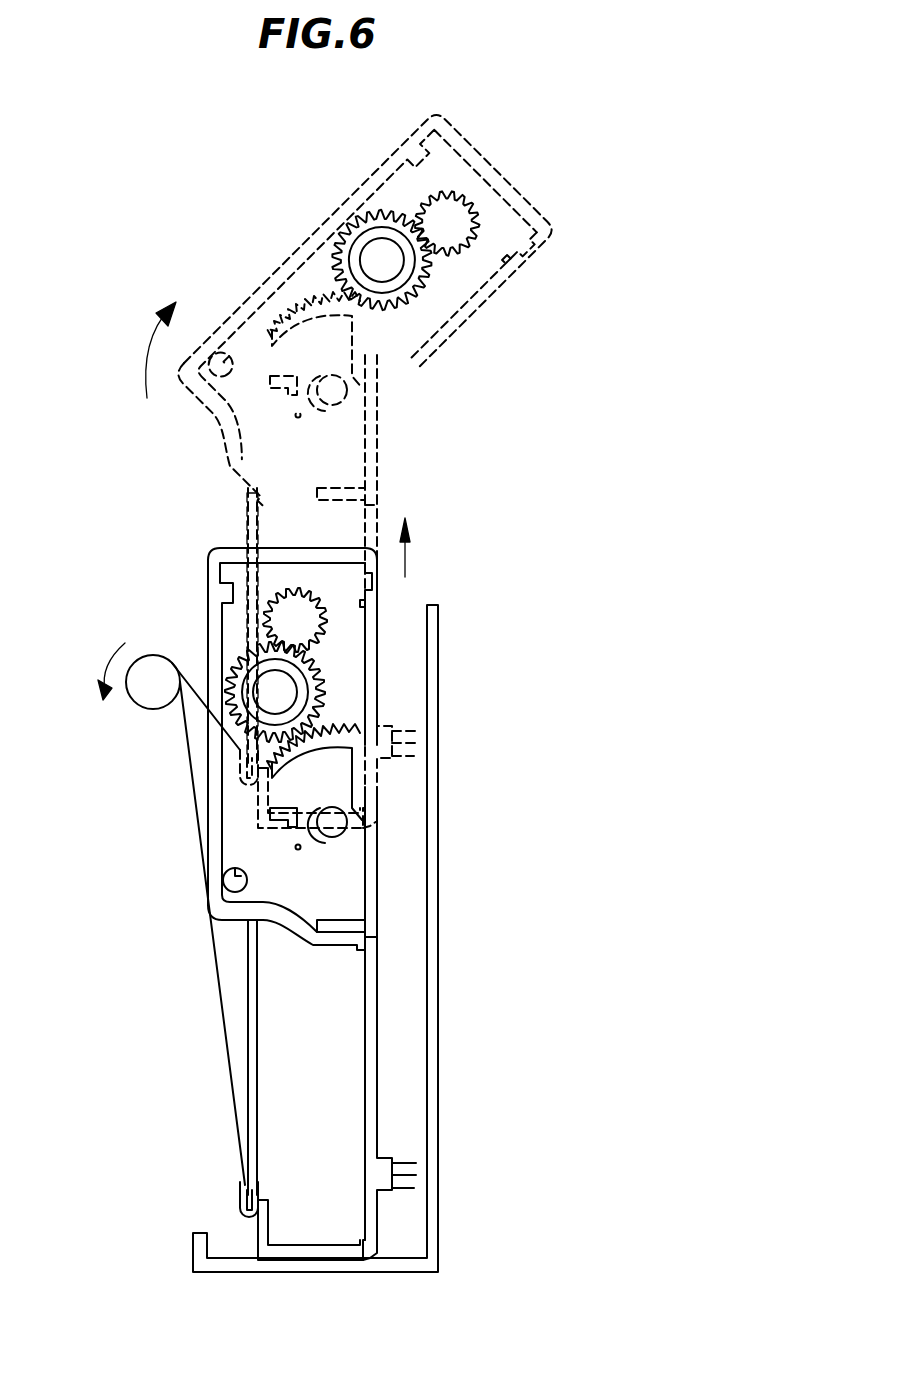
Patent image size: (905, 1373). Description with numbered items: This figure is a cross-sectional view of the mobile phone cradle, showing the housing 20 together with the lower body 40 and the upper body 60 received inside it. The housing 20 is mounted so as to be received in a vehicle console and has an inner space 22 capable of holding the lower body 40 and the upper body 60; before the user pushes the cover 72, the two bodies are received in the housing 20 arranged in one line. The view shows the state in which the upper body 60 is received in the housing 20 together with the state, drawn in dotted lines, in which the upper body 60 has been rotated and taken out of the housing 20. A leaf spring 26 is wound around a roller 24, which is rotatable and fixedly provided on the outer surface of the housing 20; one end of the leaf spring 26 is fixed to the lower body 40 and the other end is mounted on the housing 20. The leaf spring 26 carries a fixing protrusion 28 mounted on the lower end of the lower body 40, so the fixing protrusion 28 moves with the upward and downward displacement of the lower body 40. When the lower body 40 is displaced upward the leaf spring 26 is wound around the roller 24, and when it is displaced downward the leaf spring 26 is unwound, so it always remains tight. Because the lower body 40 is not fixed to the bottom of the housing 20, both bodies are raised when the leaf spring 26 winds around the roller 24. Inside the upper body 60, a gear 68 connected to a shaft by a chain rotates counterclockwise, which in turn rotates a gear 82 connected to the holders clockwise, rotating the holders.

The housing 20 is at (432, 889).
The inner space 22 is at (395, 1044).
The roller 24 is at (143, 695).
The leaf spring 26 is at (213, 957).
The fixing protrusion 28 is at (243, 1193).
The lower body 40 is at (373, 982).
The upper body 60 is at (213, 623).
The gear 68 is at (407, 300).
The cover 72 is at (240, 550).
The gear 82 is at (290, 592).